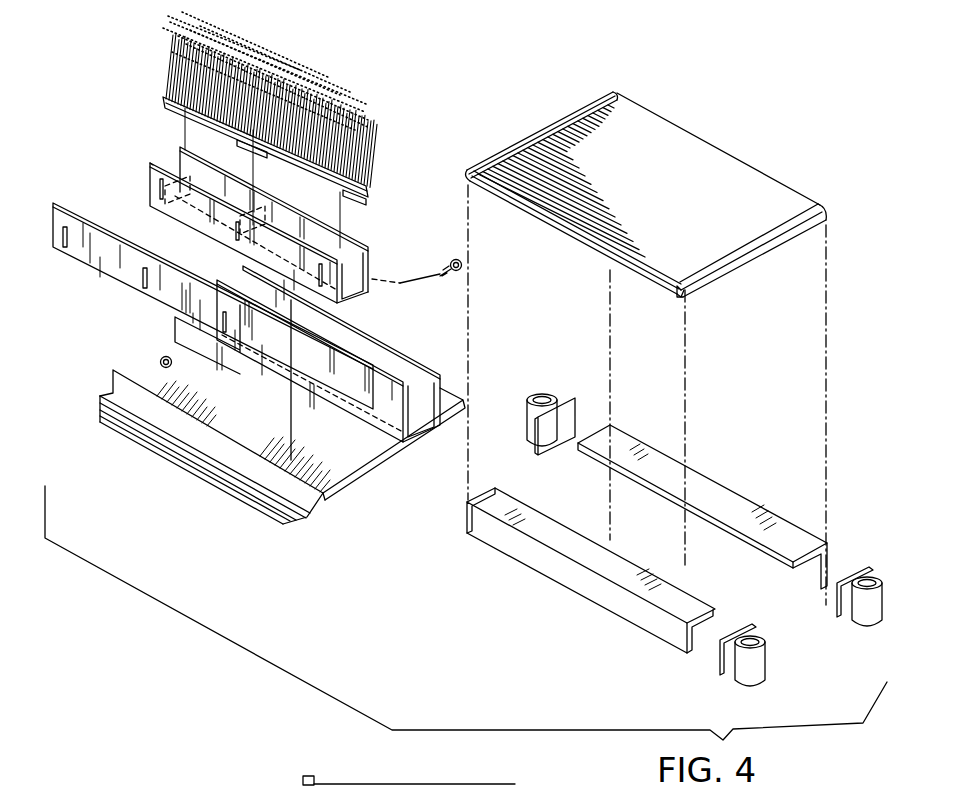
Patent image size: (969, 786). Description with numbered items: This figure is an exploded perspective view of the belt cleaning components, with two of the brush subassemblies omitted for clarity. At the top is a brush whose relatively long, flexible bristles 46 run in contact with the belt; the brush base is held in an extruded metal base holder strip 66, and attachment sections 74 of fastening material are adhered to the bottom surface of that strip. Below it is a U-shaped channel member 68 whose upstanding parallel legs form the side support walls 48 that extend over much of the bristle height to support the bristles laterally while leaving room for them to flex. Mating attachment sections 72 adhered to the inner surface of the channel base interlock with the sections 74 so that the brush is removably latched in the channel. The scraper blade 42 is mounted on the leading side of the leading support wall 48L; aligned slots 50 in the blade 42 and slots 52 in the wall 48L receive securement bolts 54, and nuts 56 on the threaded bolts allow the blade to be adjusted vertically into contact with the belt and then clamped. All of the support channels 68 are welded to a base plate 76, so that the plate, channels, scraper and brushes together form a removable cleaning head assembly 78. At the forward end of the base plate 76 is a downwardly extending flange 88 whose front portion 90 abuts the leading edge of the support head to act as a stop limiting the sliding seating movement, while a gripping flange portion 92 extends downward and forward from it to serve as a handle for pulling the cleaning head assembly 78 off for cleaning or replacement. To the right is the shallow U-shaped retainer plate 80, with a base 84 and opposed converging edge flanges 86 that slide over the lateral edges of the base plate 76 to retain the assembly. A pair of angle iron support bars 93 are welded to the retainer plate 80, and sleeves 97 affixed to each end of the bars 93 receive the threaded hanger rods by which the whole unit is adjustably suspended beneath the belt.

The bristles 46 is at (320, 95).
The attachment sections 74 is at (175, 117).
The base holder strip 66 is at (365, 175).
The leading support wall 48L is at (148, 181).
The slots 52 is at (160, 191).
The attachment material sections 72 is at (168, 215).
The U-shaped channel member 68 is at (357, 229).
The side support walls 48 is at (372, 258).
The scraper blade 42 is at (100, 270).
The slots 50 is at (143, 283).
The nuts 56 is at (160, 362).
The securement bolts 54 is at (452, 272).
The base plate 76 is at (230, 422).
The cleaning head assembly 78 is at (118, 445).
The downwardly extending flange 88 is at (240, 505).
The gripping flange portion 92 is at (303, 522).
The front portion 90 is at (330, 495).
The retainer plate 80 is at (660, 179).
The base 84 is at (680, 160).
The edge flanges 86 is at (560, 118).
The angle iron support bars 93 is at (745, 497).
The sleeves 97 is at (555, 395).